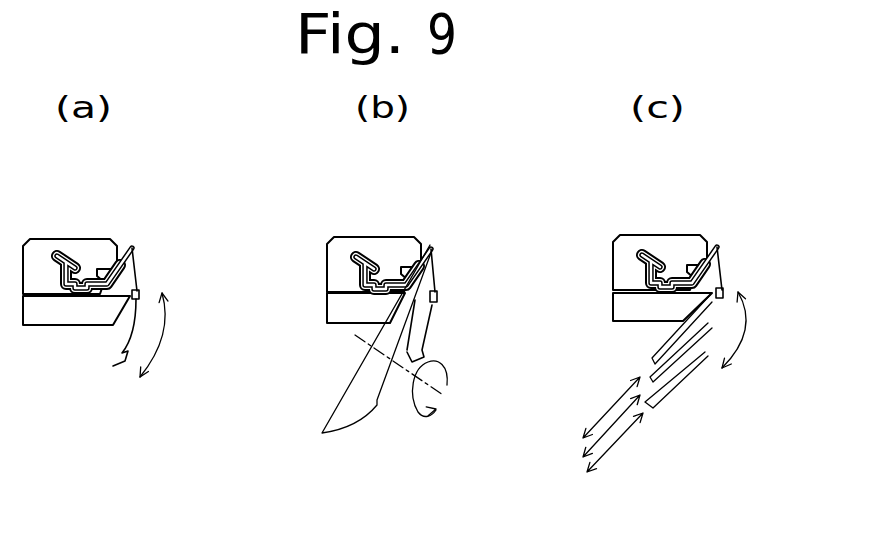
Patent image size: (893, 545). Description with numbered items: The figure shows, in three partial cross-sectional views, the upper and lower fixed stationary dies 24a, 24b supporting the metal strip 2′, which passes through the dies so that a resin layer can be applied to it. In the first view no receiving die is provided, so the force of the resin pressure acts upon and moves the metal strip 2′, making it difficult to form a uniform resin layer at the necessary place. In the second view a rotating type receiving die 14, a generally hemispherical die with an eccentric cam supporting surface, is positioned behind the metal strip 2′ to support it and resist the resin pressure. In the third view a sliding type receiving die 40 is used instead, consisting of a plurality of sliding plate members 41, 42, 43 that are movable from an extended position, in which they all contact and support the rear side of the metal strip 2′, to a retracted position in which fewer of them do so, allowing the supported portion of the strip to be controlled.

The upper fixed stationary die 24a is at (95, 247).
The lower fixed stationary die 24b is at (78, 313).
The metal strip 2′ is at (140, 275).
The receiving die 14 is at (368, 425).
The receiving die 40 is at (683, 387).
The sliding plate member 41 is at (707, 310).
The sliding plate member 42 is at (703, 328).
The sliding plate member 43 is at (712, 355).